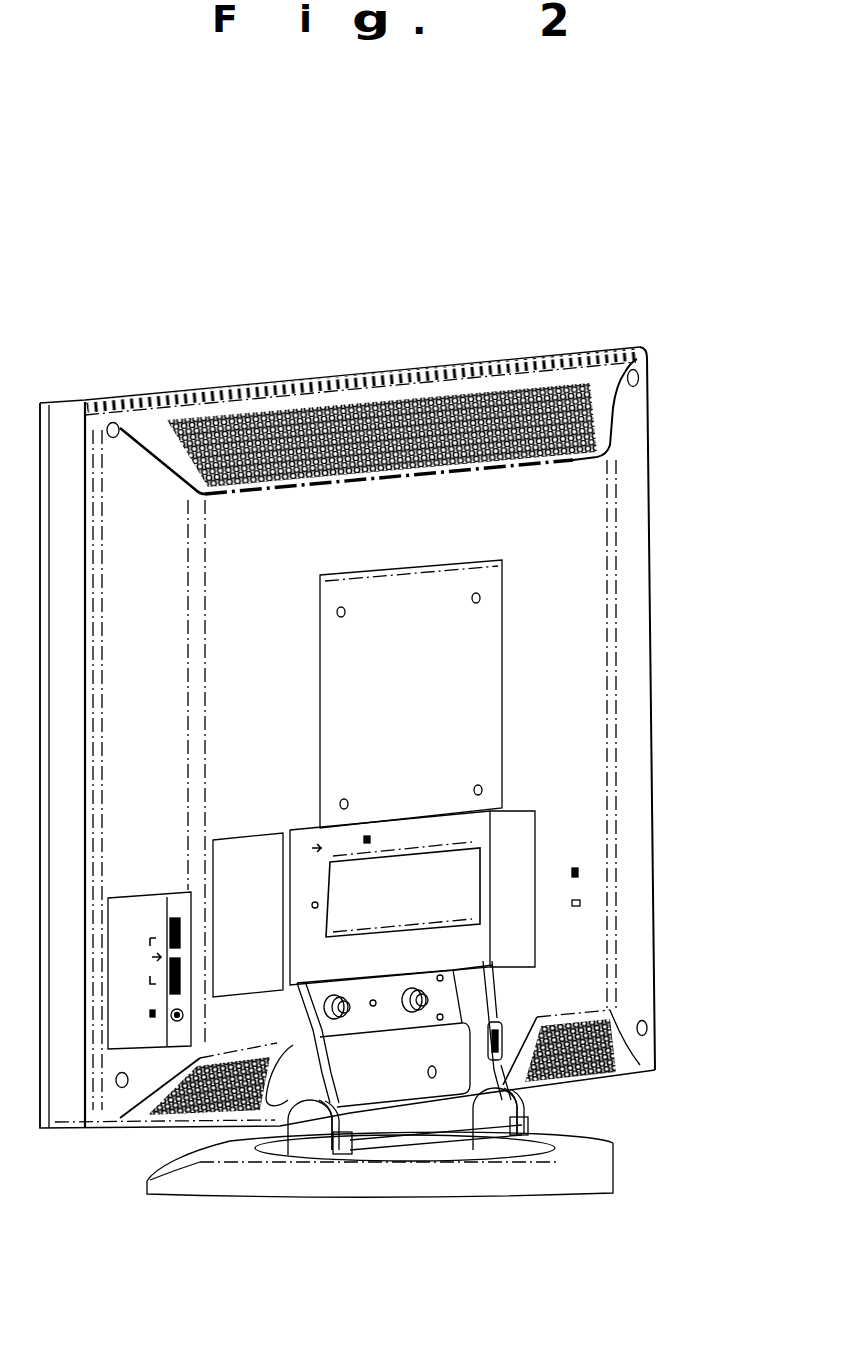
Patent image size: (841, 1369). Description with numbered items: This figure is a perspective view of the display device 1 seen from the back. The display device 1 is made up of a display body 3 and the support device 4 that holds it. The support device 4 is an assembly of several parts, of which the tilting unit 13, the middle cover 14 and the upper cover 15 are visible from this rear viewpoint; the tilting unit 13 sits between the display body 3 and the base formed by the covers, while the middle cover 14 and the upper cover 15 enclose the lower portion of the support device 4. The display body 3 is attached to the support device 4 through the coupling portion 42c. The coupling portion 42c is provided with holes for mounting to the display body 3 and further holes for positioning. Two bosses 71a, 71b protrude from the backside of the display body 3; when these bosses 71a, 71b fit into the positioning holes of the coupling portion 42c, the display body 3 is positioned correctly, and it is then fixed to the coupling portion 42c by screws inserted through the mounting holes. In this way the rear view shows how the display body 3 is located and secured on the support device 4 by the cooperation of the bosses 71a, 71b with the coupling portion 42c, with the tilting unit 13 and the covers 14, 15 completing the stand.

The display device 1 is at (385, 269).
The display body 3 is at (653, 770).
The support device 4 is at (217, 1197).
The tilting unit 13 is at (470, 1003).
The middle cover 14 is at (530, 1120).
The upper cover 15 is at (614, 1163).
The boss 71a is at (345, 1012).
The boss 71b is at (430, 1000).
The coupling portion 42c is at (402, 1016).